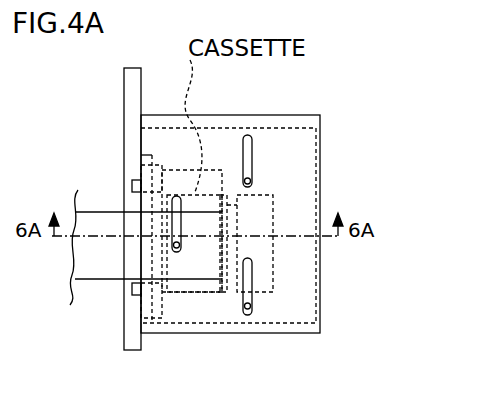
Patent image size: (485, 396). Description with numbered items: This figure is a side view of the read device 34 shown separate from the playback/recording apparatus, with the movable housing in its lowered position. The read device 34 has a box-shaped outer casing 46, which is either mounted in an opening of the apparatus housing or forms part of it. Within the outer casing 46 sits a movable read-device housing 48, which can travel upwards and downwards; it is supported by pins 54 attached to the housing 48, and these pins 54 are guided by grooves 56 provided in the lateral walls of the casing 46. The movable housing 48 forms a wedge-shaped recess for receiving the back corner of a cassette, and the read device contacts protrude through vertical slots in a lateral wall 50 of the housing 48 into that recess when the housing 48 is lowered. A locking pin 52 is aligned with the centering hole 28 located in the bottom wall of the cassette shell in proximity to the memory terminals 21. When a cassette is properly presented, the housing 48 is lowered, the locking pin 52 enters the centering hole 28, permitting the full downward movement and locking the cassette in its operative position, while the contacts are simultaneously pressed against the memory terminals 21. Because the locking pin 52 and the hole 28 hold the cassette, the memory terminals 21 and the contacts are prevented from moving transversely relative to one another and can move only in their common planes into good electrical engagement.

The read device 34 is at (124, 114).
The centering hole 28 is at (121, 281).
The outer casing 46 is at (295, 141).
The memory terminals 21 is at (218, 300).
The locking pin 52 is at (180, 292).
The lateral wall 50 is at (272, 245).
The movable read-device housing 48 is at (275, 215).
The grooves 56 is at (252, 133).
The pins 54 is at (254, 181).